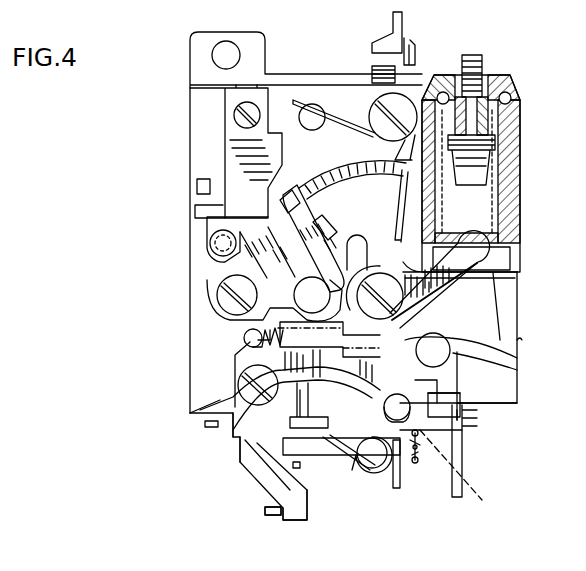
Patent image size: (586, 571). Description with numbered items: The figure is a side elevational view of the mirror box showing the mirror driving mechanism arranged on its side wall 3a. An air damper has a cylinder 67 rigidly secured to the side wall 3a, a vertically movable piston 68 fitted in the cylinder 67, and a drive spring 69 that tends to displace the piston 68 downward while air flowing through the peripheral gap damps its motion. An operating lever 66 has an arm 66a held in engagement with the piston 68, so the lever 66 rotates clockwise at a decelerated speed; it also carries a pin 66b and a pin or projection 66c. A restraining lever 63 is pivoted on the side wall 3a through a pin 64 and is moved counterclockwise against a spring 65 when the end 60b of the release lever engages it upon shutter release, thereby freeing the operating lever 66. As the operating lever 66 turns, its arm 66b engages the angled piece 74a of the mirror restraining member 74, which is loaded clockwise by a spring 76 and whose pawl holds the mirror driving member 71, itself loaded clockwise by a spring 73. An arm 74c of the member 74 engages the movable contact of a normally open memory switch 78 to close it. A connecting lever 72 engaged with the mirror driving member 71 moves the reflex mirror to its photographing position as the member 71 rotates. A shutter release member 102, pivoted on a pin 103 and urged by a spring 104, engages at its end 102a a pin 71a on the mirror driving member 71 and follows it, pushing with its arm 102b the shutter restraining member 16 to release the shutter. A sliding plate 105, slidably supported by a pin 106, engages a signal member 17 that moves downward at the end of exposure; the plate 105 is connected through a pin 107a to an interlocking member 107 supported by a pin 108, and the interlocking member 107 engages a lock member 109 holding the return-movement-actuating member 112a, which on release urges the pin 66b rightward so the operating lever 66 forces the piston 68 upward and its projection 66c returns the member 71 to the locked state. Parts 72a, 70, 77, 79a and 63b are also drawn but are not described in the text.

The side wall 3a is at (190, 100).
The pin 106 is at (232, 118).
The sliding plate 105 is at (225, 157).
The signal member 17 is at (197, 190).
The arm 74c is at (380, 40).
The memory switch 78 is at (415, 50).
The spring 76 is at (337, 108).
The cylinder 67 is at (520, 170).
The drive spring 69 is at (492, 207).
The piston 68 is at (518, 244).
The arm 66a is at (490, 277).
The mirror restraining member 74 is at (360, 172).
The mirror driving member 71 is at (312, 187).
The pivot pin 72a is at (210, 240).
The connecting lever 72 is at (195, 258).
The interlocking member 107 is at (195, 352).
The pin 107a is at (200, 317).
The pin 108 is at (215, 295).
The pivot screw 70 is at (380, 283).
The arm 66b is at (350, 240).
The angled piece 74a is at (470, 266).
The roller 77 is at (445, 340).
The operating lever 66 is at (457, 352).
The pin 71a is at (520, 340).
The spring 73 is at (243, 388).
The return-movement-actuating member 112a is at (313, 393).
The pin 64 is at (210, 417).
The lock member 109 is at (205, 427).
The restraining lever 63 is at (243, 460).
The end 60b is at (265, 512).
The spring 65 is at (307, 492).
The shutter restraining member 16 is at (300, 465).
The arm 102b is at (372, 468).
The pin 103 is at (385, 470).
The spring 104 is at (433, 458).
The shutter release member 102 is at (458, 425).
The slide arm 79a is at (470, 418).
The pin 66c is at (483, 503).
The leg portion 63b is at (457, 410).
The end 102a is at (440, 378).